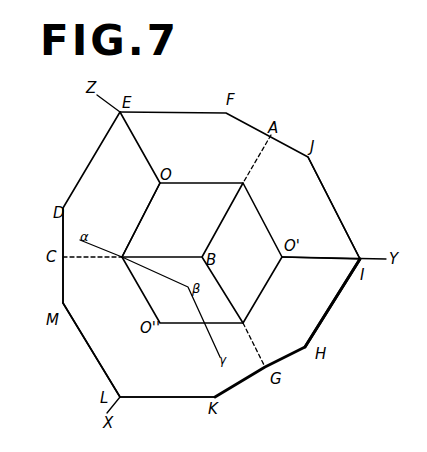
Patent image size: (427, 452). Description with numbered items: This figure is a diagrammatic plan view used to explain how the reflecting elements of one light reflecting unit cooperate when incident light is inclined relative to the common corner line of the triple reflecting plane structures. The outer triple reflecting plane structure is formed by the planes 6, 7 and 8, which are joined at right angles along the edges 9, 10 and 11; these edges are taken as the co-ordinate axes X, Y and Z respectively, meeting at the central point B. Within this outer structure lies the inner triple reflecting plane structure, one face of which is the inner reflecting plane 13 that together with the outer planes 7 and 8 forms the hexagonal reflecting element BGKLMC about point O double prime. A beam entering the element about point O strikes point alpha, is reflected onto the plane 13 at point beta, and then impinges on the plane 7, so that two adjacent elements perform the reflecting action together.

The outer reflecting plane 6 is at (305, 183).
The outer reflecting plane 7 is at (310, 317).
The outer reflecting plane 8 is at (80, 278).
The edge of outer triple reflecting plane structure 9 is at (326, 259).
The edge of outer triple reflecting plane structure 10 is at (132, 377).
The edge of outer triple reflecting plane structure 11 is at (132, 132).
The inner reflecting plane 13 is at (157, 298).